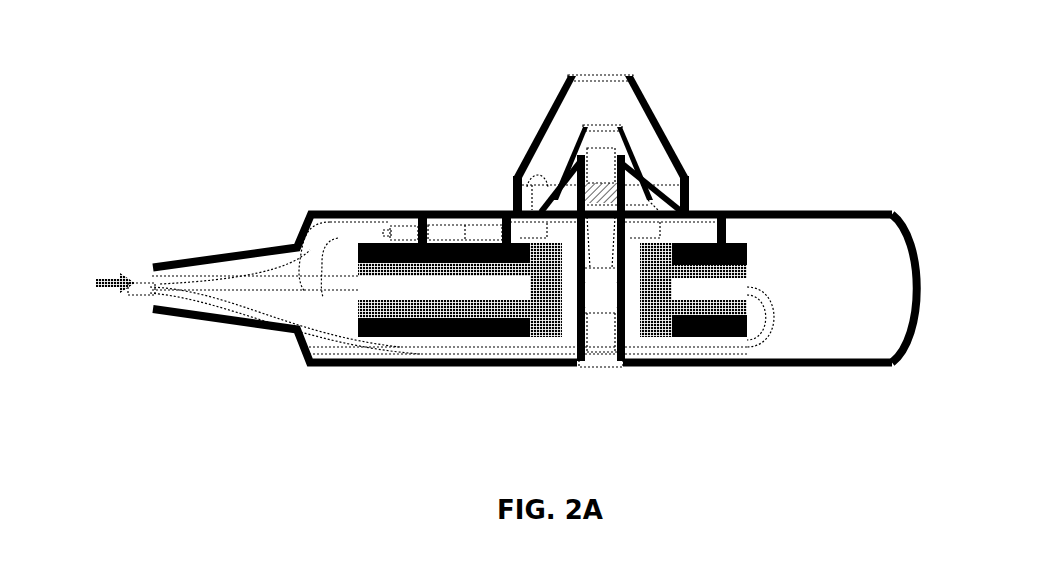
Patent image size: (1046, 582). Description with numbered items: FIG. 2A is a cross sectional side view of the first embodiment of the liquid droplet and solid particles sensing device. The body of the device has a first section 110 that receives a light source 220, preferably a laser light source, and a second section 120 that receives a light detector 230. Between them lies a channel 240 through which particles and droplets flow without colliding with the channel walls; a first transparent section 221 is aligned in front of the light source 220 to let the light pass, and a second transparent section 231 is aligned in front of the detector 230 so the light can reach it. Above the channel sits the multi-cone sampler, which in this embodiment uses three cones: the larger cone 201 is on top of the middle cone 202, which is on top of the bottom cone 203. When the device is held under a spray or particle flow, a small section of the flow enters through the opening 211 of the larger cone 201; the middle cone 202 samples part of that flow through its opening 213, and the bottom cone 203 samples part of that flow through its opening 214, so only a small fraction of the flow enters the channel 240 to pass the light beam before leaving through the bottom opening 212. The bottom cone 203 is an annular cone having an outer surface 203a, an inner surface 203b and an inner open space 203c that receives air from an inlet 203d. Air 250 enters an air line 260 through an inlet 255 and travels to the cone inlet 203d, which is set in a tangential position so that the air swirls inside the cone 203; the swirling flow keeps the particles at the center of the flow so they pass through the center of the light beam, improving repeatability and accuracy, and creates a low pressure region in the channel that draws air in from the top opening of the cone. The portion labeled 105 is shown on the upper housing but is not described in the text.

The upper housing section 105 is at (415, 212).
The first section 110 is at (332, 352).
The second section 120 is at (794, 235).
The larger cone 201 is at (556, 112).
The middle cone 202 is at (574, 149).
The bottom cone 203 is at (578, 168).
The outer surface 203a is at (618, 170).
The inner surface 203b is at (628, 185).
The inner open space 203c is at (638, 198).
The inlet 203d is at (568, 178).
The opening 211 is at (597, 76).
The bottom opening 212 is at (607, 358).
The opening 213 is at (603, 125).
The opening 214 is at (603, 148).
The light source 220 is at (457, 296).
The first transparent section 221 is at (574, 297).
The light detector 230 is at (730, 243).
The second transparent section 231 is at (627, 297).
The channel 240 is at (603, 298).
The air 250 is at (105, 280).
The inlet 255 is at (148, 280).
The air line 260 is at (358, 232).